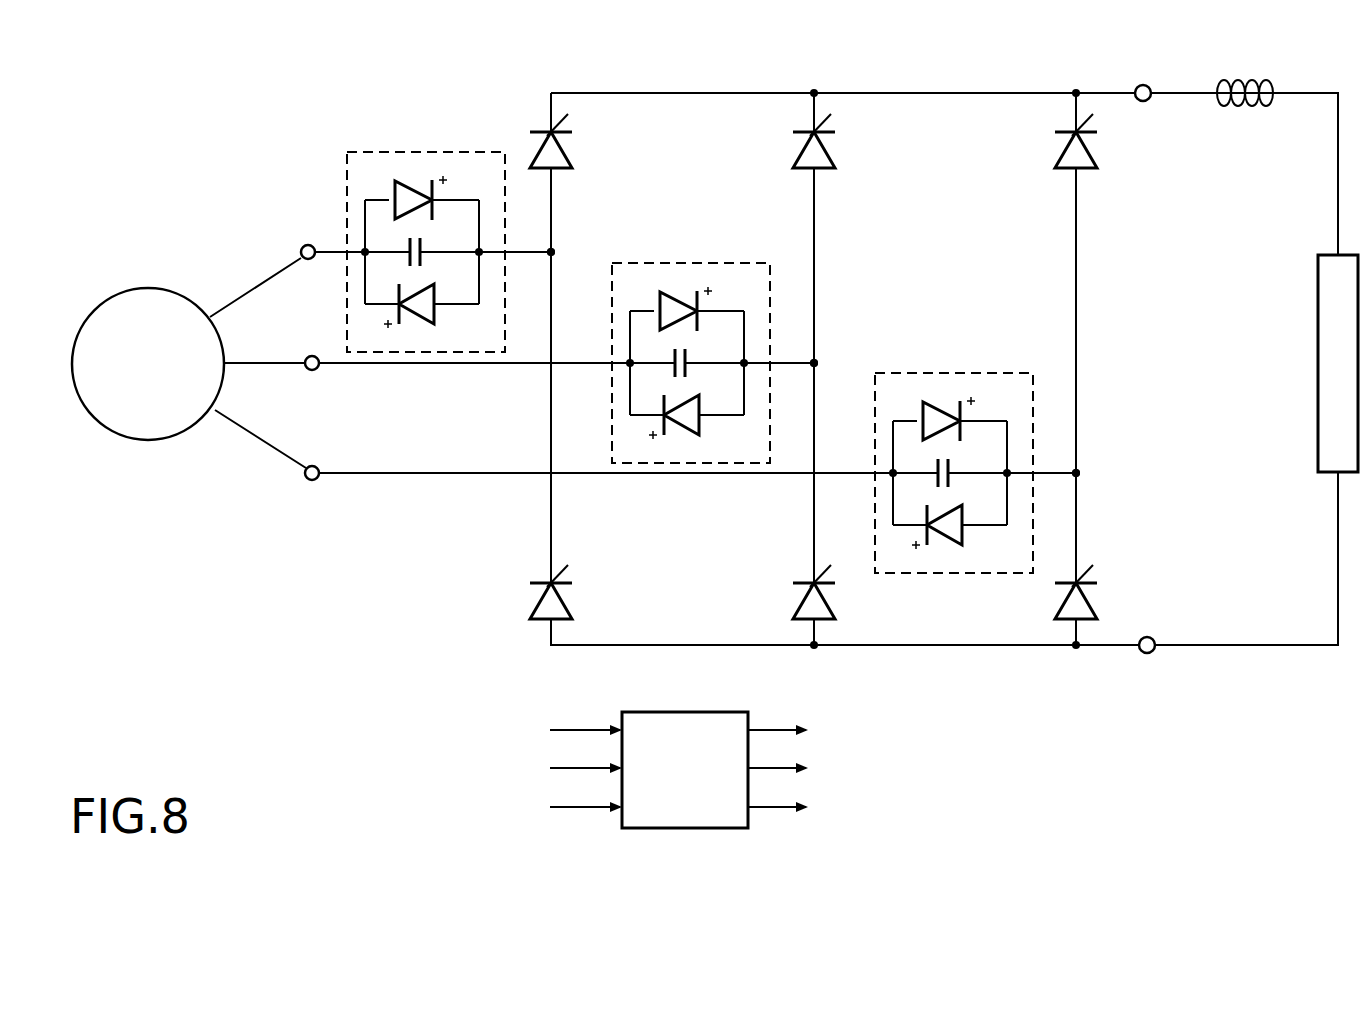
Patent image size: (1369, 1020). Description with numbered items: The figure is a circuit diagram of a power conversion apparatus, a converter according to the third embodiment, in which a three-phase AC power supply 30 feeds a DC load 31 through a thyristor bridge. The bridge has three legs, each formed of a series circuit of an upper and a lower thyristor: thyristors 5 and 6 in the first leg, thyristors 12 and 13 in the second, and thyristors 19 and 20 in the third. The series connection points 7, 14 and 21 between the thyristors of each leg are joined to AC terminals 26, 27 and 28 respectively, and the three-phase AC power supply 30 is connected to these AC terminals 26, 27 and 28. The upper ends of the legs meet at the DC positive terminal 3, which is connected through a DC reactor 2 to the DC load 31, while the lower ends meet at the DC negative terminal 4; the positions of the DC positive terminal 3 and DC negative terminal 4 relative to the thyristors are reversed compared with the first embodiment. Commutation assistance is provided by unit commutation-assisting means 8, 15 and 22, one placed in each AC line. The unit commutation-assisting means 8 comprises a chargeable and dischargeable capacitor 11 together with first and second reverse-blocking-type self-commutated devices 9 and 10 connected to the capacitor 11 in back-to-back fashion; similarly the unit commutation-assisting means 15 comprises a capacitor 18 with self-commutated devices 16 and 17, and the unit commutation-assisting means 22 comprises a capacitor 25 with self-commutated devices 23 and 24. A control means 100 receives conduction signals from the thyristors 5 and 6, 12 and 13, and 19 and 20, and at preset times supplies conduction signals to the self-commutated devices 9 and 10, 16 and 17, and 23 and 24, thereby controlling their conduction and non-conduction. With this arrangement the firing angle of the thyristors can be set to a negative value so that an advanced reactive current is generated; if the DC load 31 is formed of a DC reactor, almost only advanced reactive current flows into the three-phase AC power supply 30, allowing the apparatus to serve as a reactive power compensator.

The DC reactor 2 is at (1252, 107).
The DC positive terminal 3 is at (1143, 85).
The DC negative terminal 4 is at (1147, 654).
The thyristor 5 is at (566, 606).
The thyristor 6 is at (566, 155).
The connection point 7 is at (555, 254).
The unit commutation-assisting means 8 is at (426, 225).
The reverse-blocking-type self-commutated device 9 is at (437, 318).
The reverse-blocking-type self-commutated device 10 is at (438, 194).
The capacitor 11 is at (424, 246).
The thyristor 12 is at (829, 606).
The thyristor 13 is at (829, 155).
The connection point 14 is at (818, 362).
The unit commutation-assisting means 15 is at (691, 337).
The reverse-blocking-type self-commutated device 16 is at (702, 429).
The reverse-blocking-type self-commutated device 17 is at (703, 305).
The capacitor 18 is at (689, 357).
The thyristor 19 is at (1091, 606).
The thyristor 20 is at (1091, 155).
The connection point 21 is at (1080, 475).
The unit commutation-assisting means 22 is at (954, 448).
The reverse-blocking-type self-commutated device 23 is at (965, 539).
The reverse-blocking-type self-commutated device 24 is at (966, 415).
The capacitor 25 is at (952, 467).
The AC terminal 26 is at (308, 260).
The AC terminal 27 is at (305, 358).
The AC terminal 28 is at (312, 481).
The three-phase AC power supply 30 is at (136, 290).
The DC load 31 is at (1318, 358).
The control means 100 is at (703, 712).